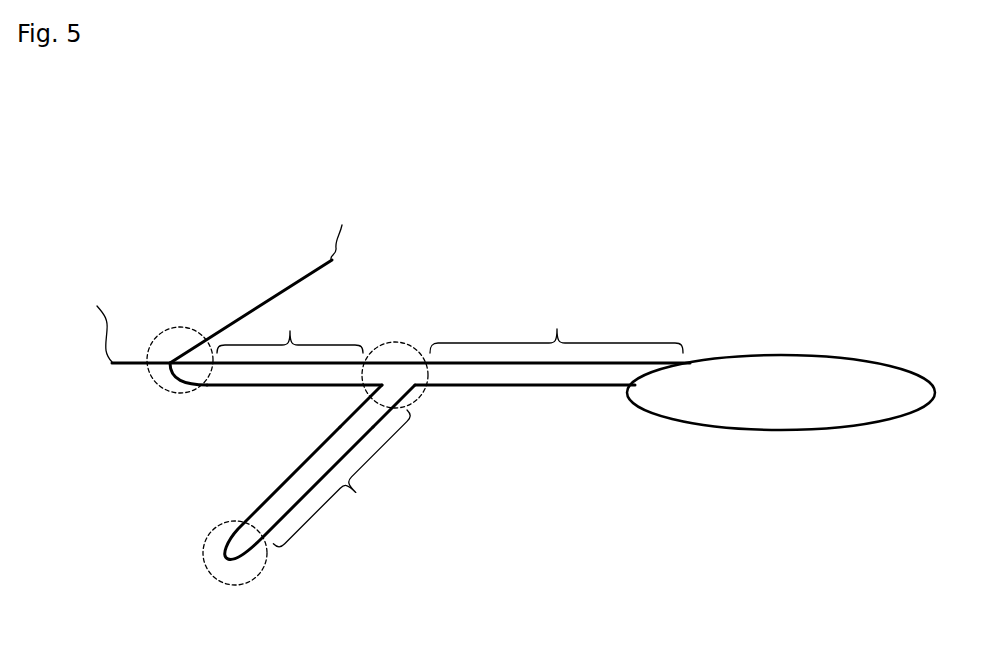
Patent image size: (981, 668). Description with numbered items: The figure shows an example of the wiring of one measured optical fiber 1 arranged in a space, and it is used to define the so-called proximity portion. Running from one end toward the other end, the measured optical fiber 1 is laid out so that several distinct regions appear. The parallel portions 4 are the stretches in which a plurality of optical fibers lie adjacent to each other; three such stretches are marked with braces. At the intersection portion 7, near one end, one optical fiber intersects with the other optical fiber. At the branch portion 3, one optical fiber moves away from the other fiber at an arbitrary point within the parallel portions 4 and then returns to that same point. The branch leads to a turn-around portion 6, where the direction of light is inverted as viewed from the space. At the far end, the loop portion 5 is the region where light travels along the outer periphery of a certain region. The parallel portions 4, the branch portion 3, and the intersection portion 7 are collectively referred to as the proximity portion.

The measured optical fiber 1 is at (556, 259).
The branch portion 3 is at (418, 395).
The parallel portion 4 is at (445, 428).
The loop portion 5 is at (837, 428).
The turn-around portion 6 is at (218, 582).
The intersection portion 7 is at (162, 387).